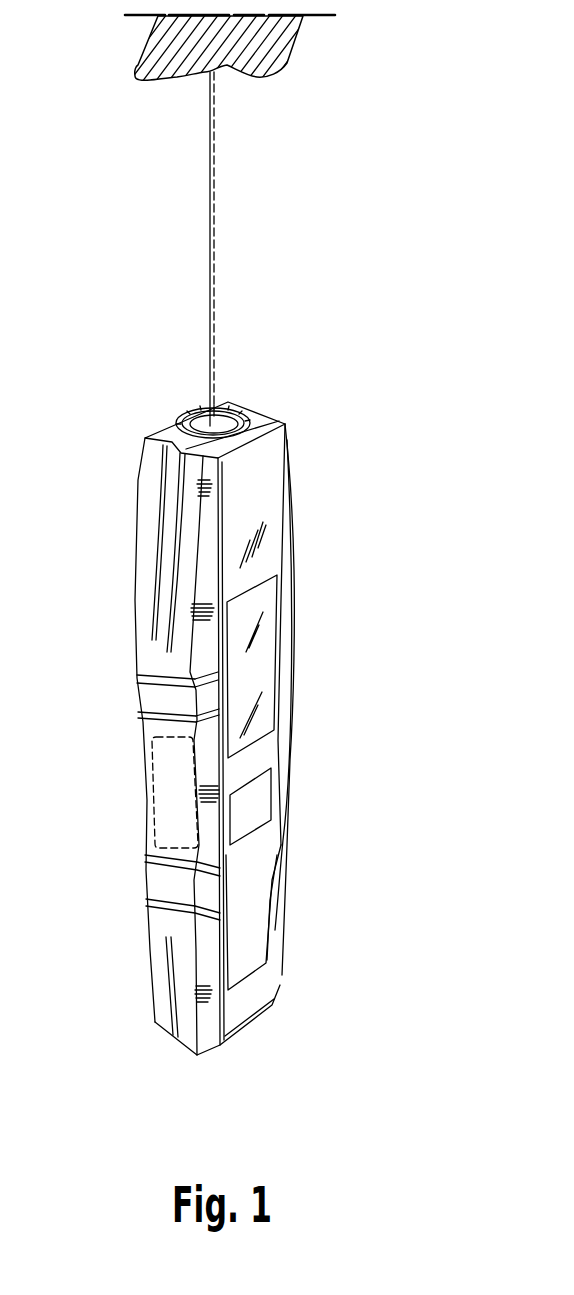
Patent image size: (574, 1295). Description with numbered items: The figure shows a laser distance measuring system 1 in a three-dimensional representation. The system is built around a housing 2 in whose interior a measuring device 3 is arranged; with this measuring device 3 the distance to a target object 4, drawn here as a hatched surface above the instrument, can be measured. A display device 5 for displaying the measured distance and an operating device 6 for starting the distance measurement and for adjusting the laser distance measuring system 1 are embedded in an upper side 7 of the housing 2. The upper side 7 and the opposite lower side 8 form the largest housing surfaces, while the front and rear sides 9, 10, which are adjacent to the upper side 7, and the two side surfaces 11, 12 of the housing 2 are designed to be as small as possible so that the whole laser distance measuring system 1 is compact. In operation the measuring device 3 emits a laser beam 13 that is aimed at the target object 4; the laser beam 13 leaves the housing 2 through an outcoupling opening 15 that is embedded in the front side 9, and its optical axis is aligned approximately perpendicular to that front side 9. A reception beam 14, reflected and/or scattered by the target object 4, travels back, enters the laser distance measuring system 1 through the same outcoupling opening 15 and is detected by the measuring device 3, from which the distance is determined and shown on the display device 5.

The laser distance measuring system 1 is at (225, 717).
The housing 2 is at (260, 497).
The measuring device 3 is at (152, 793).
The target object 4 is at (178, 53).
The display device 5 is at (262, 648).
The operating device 6 is at (263, 795).
The upper side 7 is at (255, 910).
The lower side 8 is at (135, 540).
The front side 9 is at (270, 408).
The rear side 10 is at (252, 1028).
The side surface 11 is at (165, 928).
The side surface 12 is at (291, 738).
The laser beam 13 is at (207, 262).
The reception beam 14 is at (213, 183).
The outcoupling opening 15 is at (201, 408).